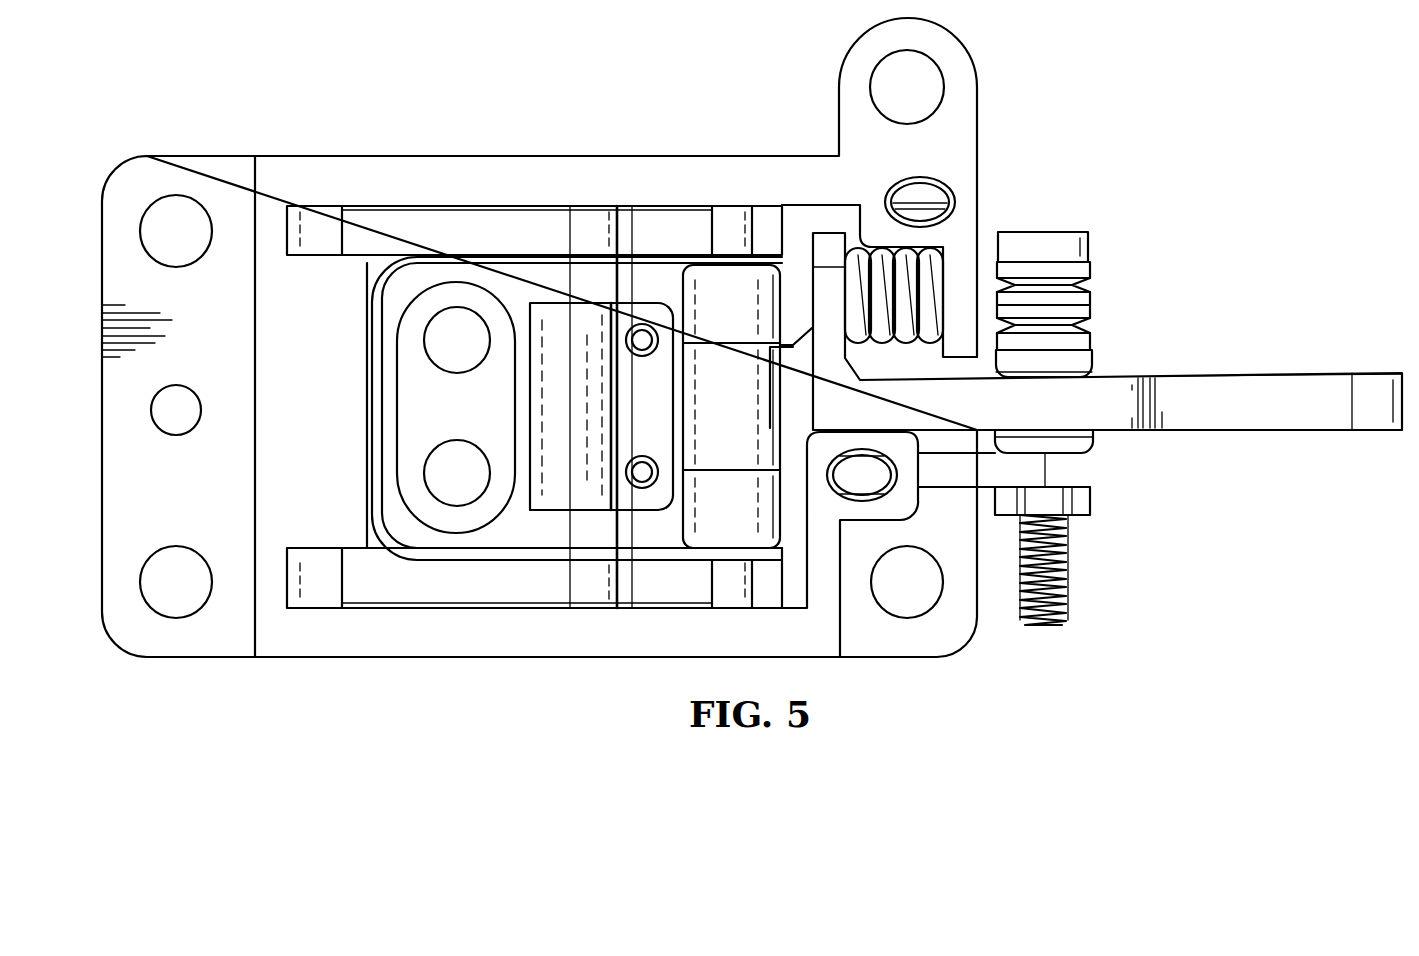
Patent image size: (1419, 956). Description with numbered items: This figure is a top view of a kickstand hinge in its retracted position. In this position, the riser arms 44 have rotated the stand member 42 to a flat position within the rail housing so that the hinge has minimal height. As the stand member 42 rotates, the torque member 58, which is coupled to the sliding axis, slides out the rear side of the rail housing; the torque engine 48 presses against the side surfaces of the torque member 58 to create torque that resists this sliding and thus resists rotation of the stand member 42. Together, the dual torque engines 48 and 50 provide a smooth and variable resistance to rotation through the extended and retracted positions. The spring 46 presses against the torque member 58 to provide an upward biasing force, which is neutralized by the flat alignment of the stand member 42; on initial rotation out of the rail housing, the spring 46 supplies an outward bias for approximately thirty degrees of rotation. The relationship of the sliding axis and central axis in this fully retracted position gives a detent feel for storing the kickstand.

The stand member 42 is at (388, 400).
The riser arms 44 is at (475, 218).
The spring 46 is at (862, 248).
The torque engine 48 is at (1045, 232).
The torque engine 50 is at (600, 400).
The torque member 58 is at (1250, 432).